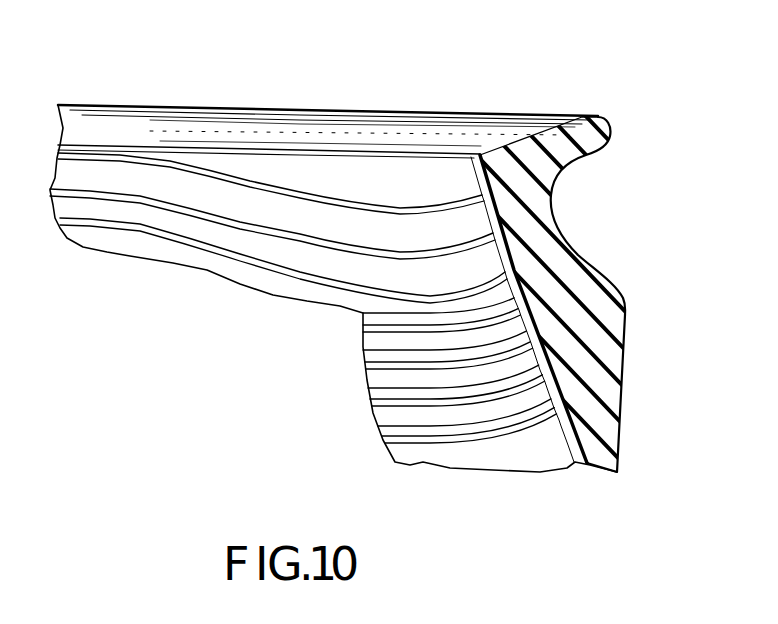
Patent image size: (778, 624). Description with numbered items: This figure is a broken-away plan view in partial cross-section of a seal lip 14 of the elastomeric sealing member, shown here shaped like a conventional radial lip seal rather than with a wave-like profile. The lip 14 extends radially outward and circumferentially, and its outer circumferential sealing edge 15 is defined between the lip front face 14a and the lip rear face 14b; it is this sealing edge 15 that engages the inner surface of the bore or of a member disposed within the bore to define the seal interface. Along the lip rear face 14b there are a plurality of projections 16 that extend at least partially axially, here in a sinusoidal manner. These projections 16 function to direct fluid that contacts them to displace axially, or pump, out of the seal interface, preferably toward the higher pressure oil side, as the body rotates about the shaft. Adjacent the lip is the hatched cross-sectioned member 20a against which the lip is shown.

The lip 14 is at (388, 126).
The lip front face 14a is at (437, 130).
The lip rear face 14b is at (357, 299).
The outer circumferential sealing edge 15 is at (273, 152).
The projections 16 is at (195, 205).
The frame member (cross-section) 20a is at (555, 142).